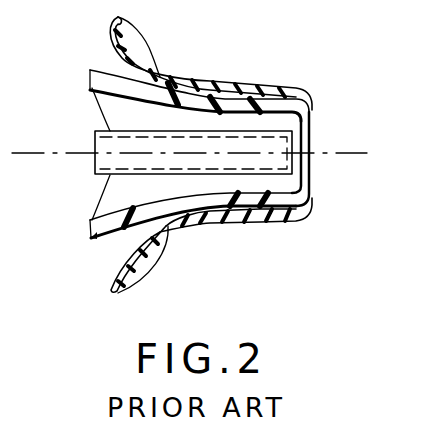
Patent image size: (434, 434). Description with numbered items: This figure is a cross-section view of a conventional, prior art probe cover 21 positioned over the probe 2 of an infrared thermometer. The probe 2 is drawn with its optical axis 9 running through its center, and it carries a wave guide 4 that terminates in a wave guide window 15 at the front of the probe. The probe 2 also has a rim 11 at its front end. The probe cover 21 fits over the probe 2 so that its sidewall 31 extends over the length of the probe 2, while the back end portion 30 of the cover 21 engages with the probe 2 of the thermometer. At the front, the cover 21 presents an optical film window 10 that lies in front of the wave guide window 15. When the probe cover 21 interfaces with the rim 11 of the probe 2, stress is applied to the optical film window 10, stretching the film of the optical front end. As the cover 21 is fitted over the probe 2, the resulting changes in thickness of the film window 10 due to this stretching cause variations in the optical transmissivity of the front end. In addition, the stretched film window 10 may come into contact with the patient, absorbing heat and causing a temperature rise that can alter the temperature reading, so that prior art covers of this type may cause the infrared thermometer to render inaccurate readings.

The probe 2 is at (171, 208).
The wave guide 4 is at (96, 135).
The optical axis 9 is at (28, 154).
The optical film window 10 is at (310, 170).
The rim 11 is at (300, 98).
The wave guide window 15 is at (295, 146).
The probe cover 21 is at (238, 226).
The back end portion 30 is at (140, 262).
The sidewall 31 is at (205, 75).